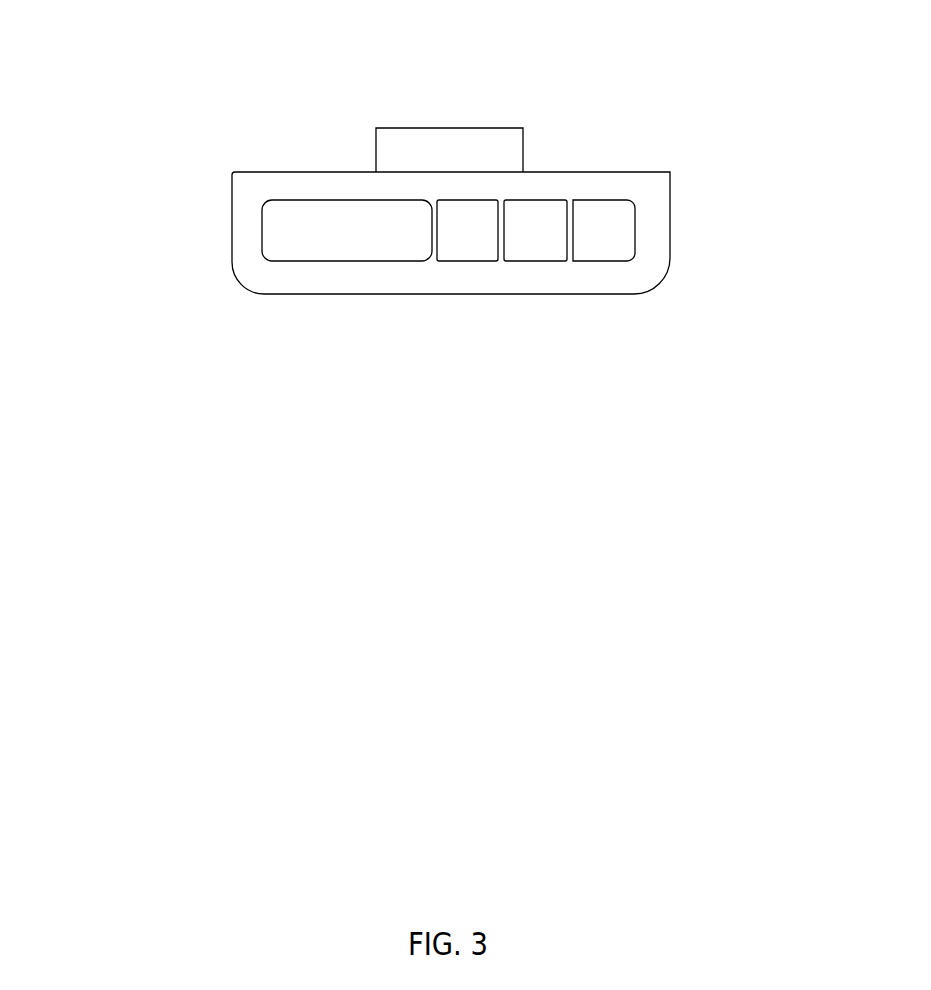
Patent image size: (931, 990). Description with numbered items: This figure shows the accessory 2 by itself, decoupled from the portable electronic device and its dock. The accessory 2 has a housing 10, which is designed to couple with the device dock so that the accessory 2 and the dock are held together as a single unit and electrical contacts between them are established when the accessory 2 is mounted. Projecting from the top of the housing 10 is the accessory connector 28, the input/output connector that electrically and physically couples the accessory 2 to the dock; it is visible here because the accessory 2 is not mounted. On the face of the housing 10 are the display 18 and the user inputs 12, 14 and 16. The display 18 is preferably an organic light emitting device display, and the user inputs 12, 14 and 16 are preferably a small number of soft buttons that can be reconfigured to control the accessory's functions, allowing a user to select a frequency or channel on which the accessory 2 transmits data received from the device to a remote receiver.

The accessory 2 is at (453, 241).
The housing 10 is at (648, 202).
The accessory connector 28 is at (492, 152).
The display 18 is at (348, 228).
The user input 16 is at (467, 232).
The user input 14 is at (534, 232).
The user input 12 is at (603, 232).